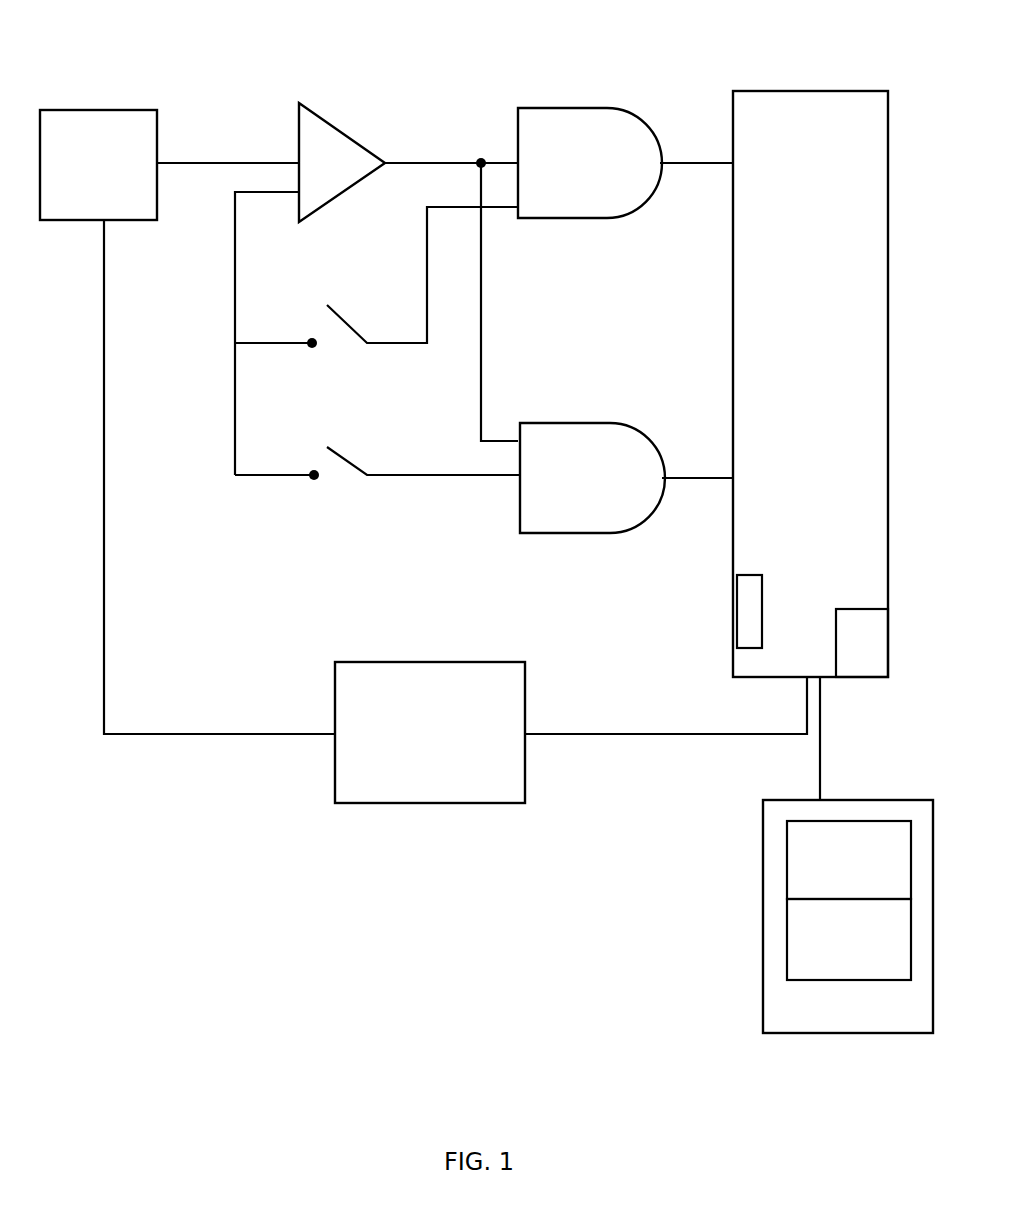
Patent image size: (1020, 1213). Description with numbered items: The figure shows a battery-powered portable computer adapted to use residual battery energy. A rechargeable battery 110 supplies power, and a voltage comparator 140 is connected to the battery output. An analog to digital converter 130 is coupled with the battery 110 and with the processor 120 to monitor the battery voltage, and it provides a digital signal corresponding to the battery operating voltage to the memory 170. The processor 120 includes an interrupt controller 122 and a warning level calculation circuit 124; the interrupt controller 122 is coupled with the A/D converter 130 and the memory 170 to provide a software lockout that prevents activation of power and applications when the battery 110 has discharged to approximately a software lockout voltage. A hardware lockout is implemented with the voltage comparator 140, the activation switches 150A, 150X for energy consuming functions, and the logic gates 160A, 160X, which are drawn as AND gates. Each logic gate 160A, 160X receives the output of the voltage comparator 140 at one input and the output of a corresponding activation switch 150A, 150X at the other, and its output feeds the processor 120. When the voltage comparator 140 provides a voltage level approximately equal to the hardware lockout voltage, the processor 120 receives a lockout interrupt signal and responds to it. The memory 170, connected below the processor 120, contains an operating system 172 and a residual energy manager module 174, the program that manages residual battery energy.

The battery 110 is at (101, 110).
The processor 120 is at (805, 91).
The interrupt controller 122 is at (747, 575).
The warning level calculation circuit 124 is at (867, 609).
The analog to digital converter 130 is at (447, 803).
The voltage comparator 140 is at (327, 118).
The activation switch 150A is at (342, 318).
The activation switch 150X is at (342, 458).
The logic gate 160A is at (597, 108).
The logic gate 160X is at (599, 423).
The memory 170 is at (850, 1033).
The operating system 172 is at (787, 950).
The residual energy manager module 174 is at (787, 868).